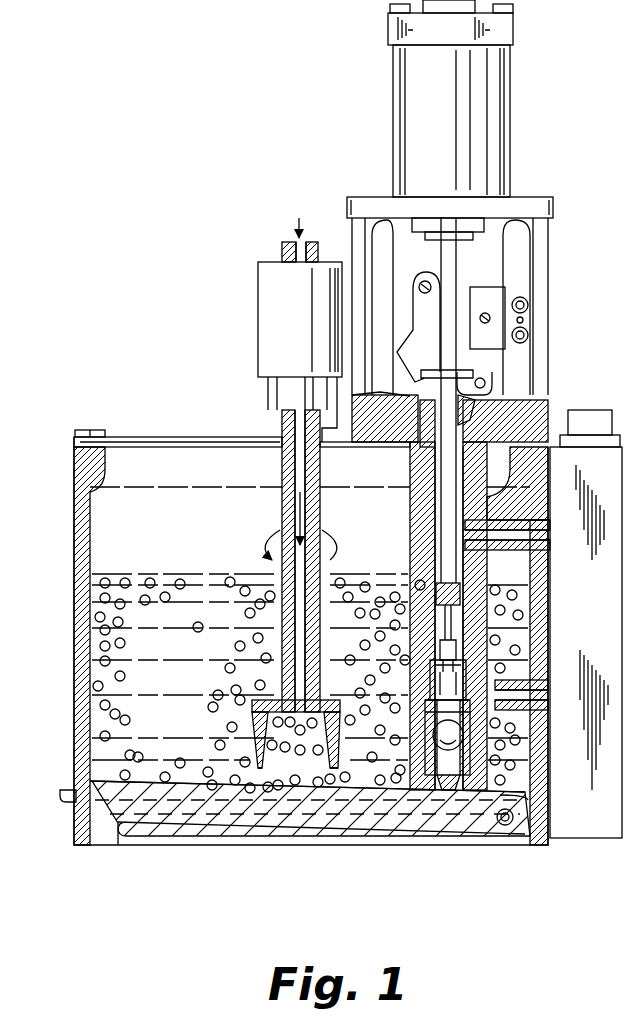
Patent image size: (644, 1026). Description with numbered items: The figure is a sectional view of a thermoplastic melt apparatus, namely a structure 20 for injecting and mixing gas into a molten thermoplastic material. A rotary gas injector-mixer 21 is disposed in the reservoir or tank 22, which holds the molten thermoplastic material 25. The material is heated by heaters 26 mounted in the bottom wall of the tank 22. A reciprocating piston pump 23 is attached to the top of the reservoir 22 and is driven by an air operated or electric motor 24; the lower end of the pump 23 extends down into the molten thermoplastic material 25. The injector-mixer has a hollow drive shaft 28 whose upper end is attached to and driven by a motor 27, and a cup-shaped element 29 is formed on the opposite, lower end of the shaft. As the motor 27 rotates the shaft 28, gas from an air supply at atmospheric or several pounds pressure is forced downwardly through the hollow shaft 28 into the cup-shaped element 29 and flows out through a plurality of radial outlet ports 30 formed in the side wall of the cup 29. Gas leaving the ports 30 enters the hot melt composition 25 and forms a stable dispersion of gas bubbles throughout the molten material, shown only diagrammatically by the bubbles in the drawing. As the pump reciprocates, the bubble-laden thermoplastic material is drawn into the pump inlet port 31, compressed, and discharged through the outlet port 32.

The structure 20 is at (150, 403).
The rotary gas injector-mixer 21 is at (273, 475).
The reservoir or tank 22 is at (74, 520).
The piston pump 23 is at (412, 534).
The motor 24 is at (470, 113).
The molten thermoplastic material 25 is at (133, 687).
The heaters 26 is at (235, 815).
The motor 27 is at (268, 345).
The hollow drive shaft 28 is at (282, 508).
The cup-shaped element 29 is at (260, 770).
The radial outlet ports 30 is at (250, 732).
The pump inlet port 31 is at (453, 778).
The outlet port 32 is at (540, 537).